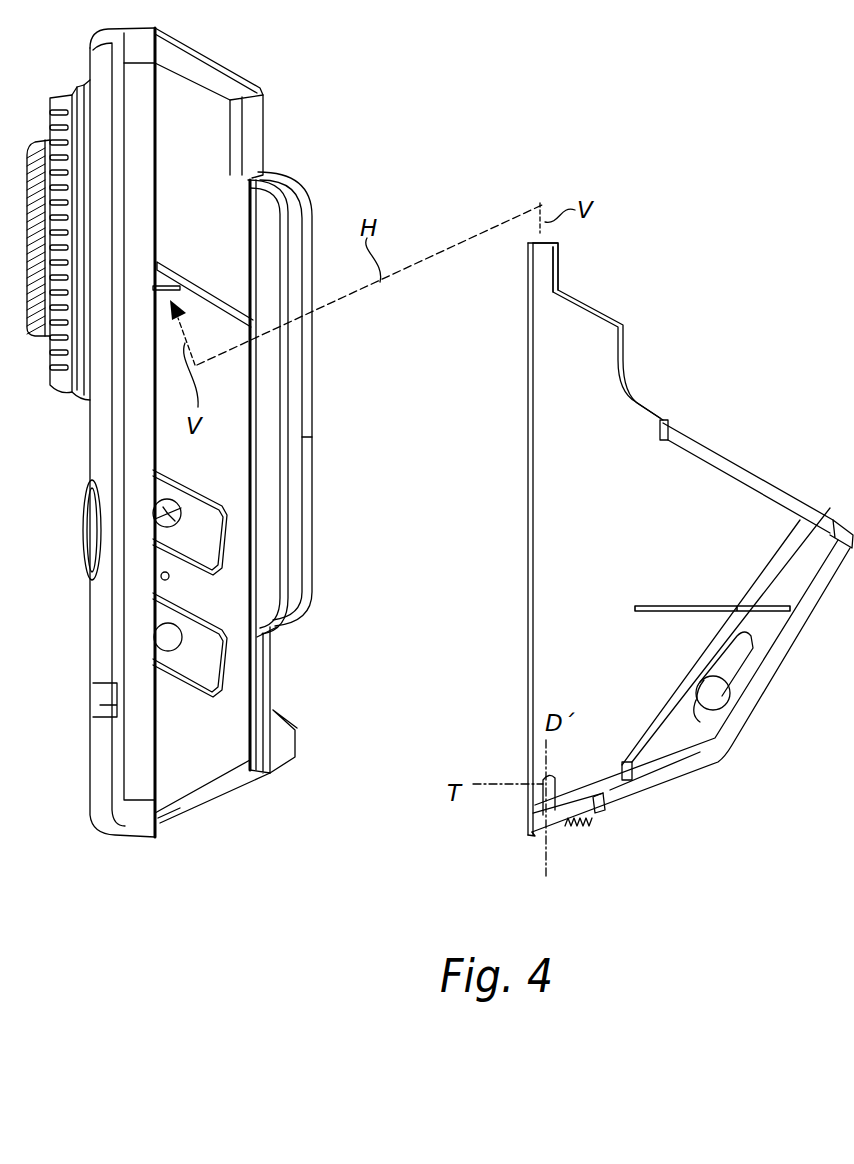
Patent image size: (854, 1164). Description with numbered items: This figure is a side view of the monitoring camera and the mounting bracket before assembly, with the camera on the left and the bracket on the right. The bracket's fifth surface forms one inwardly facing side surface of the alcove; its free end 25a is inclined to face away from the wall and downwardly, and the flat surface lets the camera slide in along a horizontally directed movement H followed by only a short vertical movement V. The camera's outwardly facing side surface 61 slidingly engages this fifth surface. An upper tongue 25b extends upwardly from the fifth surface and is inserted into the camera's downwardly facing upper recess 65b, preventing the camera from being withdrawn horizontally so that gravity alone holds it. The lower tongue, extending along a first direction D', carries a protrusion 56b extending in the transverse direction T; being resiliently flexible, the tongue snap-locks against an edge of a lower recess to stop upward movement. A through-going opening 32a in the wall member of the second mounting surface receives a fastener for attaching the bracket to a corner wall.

The upper recess 65b is at (163, 277).
The side surface 61 is at (207, 467).
The mounting bracket 25a is at (645, 551).
The upper tongue 25b is at (548, 267).
The through-going opening 32a is at (721, 693).
The protrusion 56b is at (598, 807).